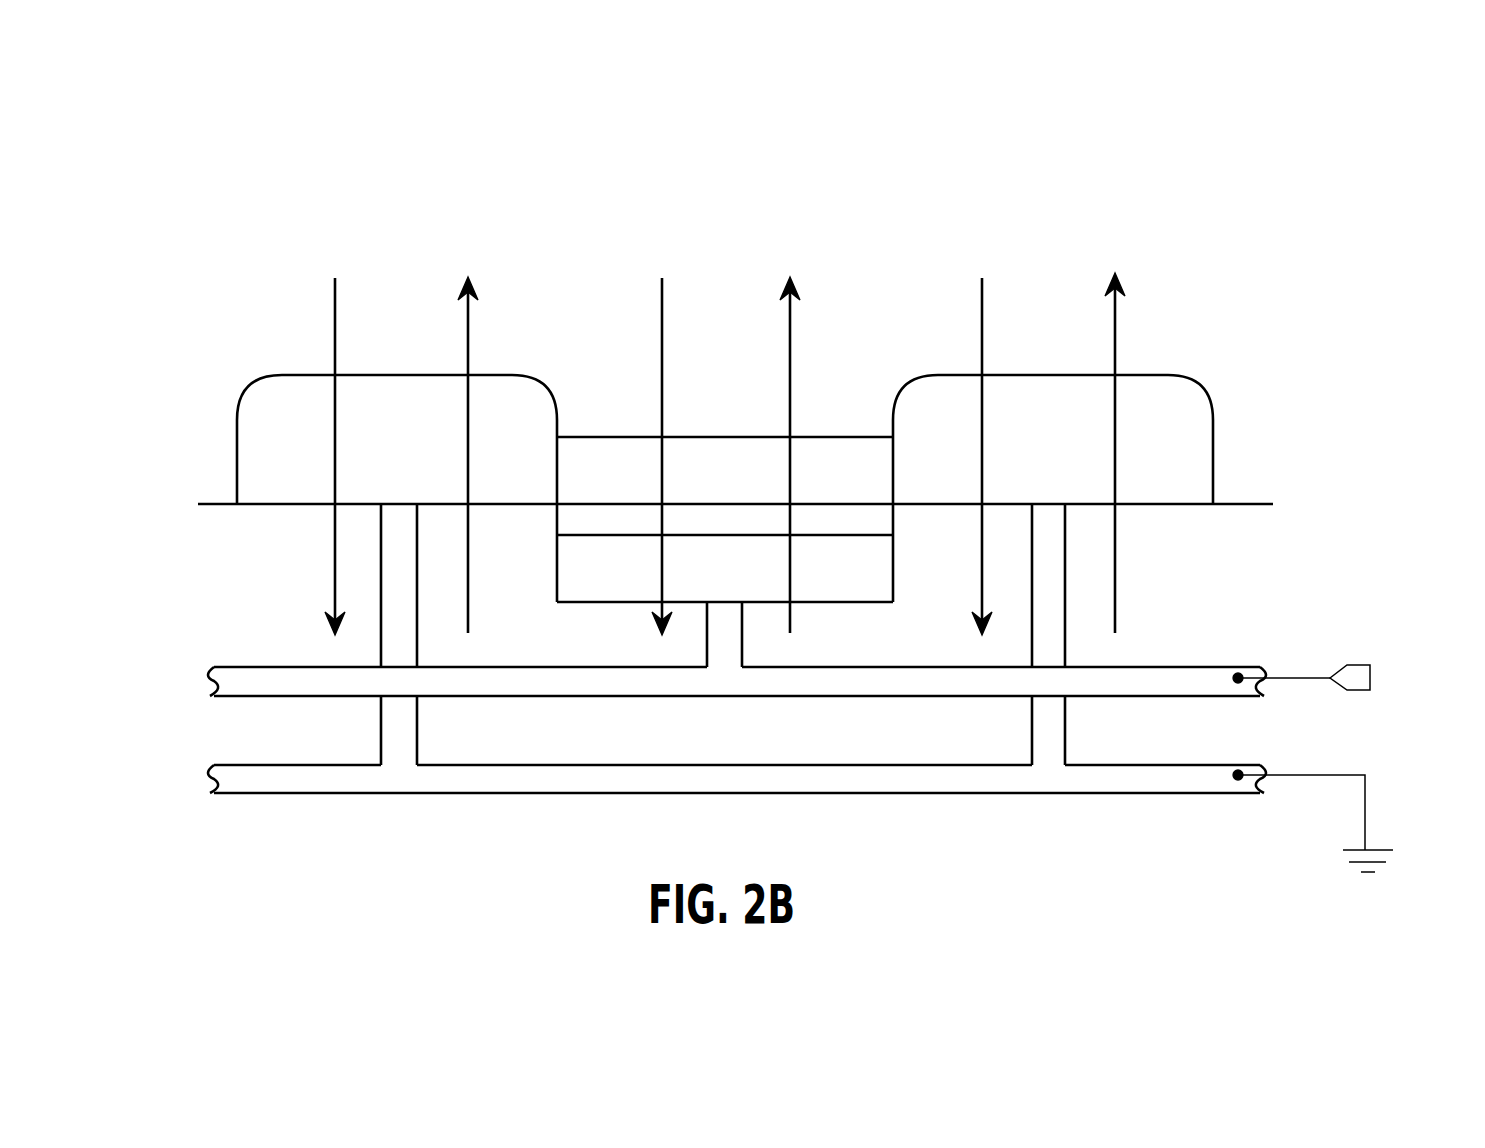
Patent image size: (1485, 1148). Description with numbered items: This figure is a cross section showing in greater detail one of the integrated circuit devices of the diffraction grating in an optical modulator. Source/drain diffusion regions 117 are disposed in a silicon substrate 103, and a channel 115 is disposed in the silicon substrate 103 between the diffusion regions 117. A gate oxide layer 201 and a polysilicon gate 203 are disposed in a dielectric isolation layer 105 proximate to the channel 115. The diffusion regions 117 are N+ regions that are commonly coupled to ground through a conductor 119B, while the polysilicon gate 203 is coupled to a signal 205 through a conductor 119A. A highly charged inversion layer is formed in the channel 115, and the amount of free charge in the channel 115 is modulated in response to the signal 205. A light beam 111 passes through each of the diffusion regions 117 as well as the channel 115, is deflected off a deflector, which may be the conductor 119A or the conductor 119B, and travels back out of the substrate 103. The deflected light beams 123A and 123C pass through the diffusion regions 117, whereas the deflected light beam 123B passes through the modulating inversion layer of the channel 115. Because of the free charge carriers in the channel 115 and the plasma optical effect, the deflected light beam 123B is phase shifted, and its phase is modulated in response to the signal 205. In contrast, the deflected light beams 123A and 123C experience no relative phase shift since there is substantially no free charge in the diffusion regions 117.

The silicon substrate 103 is at (1252, 172).
The dielectric isolation layer 105 is at (1263, 552).
The light beam 111 is at (330, 332).
The channel 115 is at (808, 445).
The source/drain diffusion regions 117 is at (255, 423).
The conductor 119A is at (1195, 662).
The conductor 119B is at (1175, 762).
The deflected light beam 123A is at (487, 327).
The deflected light beam 123B is at (800, 322).
The deflected light beam 123C is at (1127, 310).
The gate oxide layer 201 is at (562, 517).
The polysilicon gate 203 is at (575, 578).
The signal 205 is at (1412, 695).